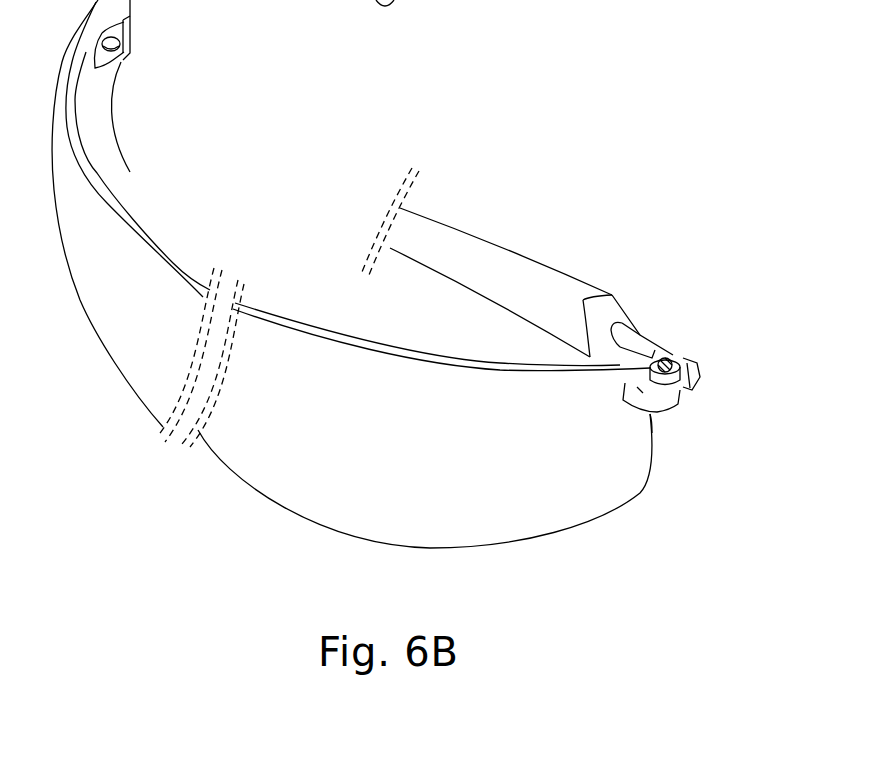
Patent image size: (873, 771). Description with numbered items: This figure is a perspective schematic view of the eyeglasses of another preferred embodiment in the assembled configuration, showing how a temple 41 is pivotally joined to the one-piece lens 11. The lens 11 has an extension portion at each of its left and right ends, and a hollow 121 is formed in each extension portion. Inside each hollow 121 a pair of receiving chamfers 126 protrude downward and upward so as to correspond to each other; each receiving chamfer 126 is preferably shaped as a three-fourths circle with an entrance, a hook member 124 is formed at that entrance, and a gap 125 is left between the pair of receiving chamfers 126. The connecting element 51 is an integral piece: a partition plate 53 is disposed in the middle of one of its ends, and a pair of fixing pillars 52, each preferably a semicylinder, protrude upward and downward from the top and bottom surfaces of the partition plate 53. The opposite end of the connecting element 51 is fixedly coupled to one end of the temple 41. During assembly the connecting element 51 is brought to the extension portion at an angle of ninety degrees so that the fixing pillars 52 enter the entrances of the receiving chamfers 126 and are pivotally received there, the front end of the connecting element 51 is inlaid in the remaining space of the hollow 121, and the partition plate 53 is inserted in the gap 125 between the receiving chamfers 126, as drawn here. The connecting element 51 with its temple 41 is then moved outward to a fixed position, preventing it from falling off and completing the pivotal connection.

The lens 11 is at (577, 503).
The temple 41 is at (527, 287).
The connecting element 51 is at (643, 332).
The fixing pillar 52 is at (667, 366).
The partition plate 53 is at (684, 391).
The hollow 121 is at (630, 395).
The hook member 124 is at (673, 362).
The gap 125 is at (127, 31).
The receiving chamfer 126 is at (668, 379).